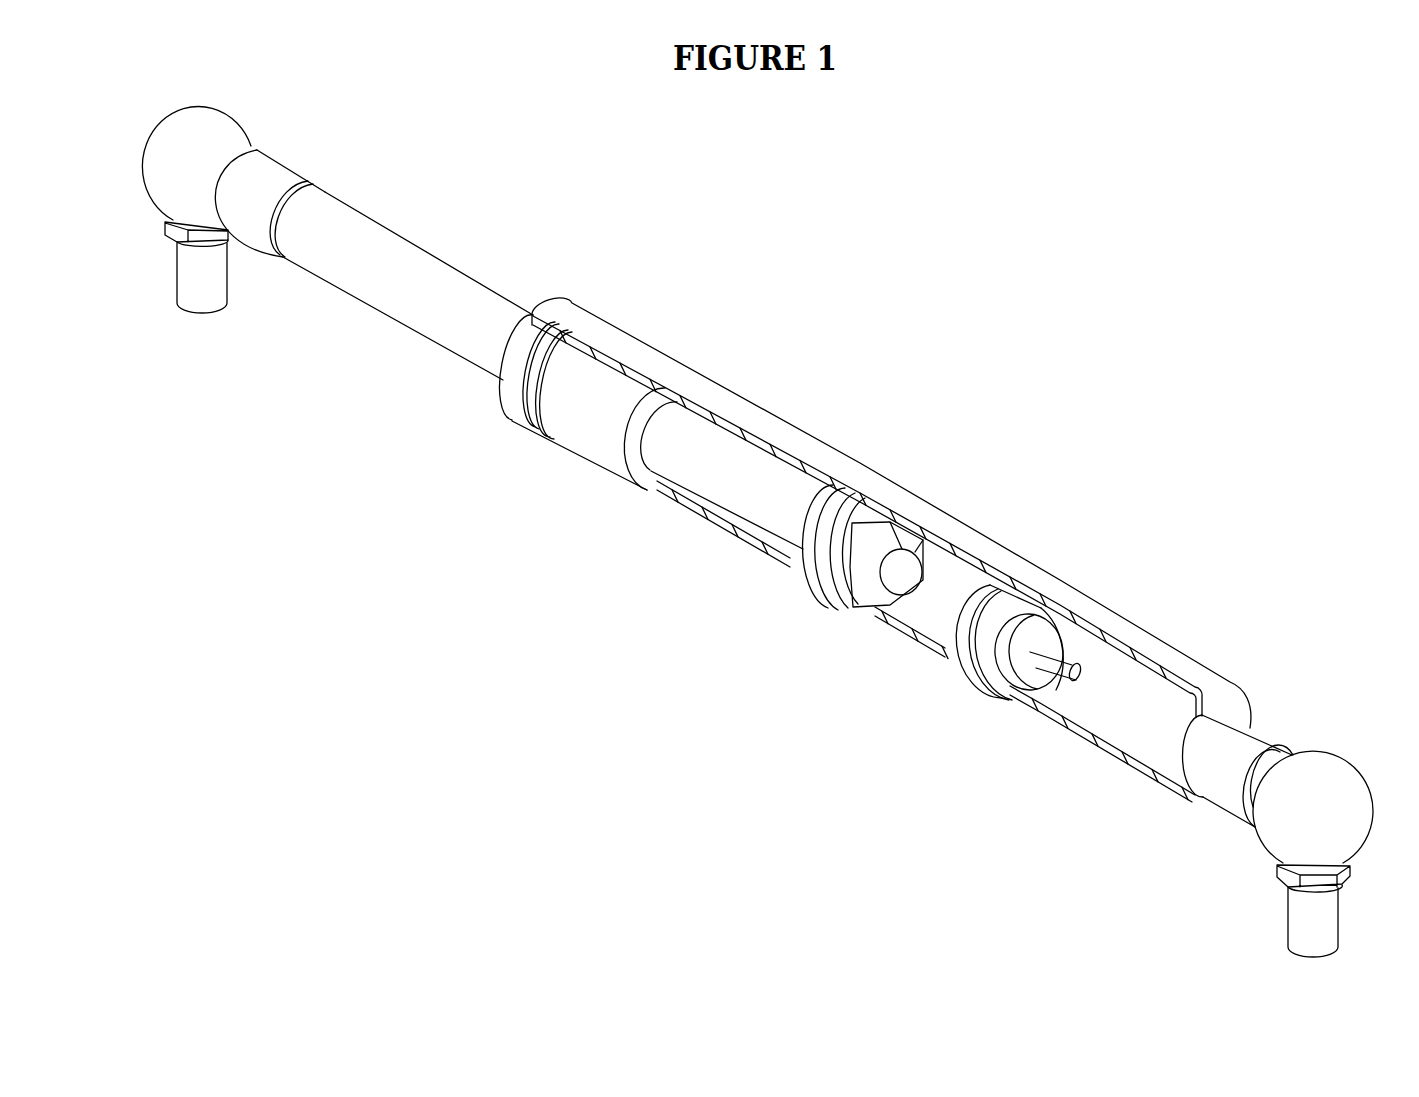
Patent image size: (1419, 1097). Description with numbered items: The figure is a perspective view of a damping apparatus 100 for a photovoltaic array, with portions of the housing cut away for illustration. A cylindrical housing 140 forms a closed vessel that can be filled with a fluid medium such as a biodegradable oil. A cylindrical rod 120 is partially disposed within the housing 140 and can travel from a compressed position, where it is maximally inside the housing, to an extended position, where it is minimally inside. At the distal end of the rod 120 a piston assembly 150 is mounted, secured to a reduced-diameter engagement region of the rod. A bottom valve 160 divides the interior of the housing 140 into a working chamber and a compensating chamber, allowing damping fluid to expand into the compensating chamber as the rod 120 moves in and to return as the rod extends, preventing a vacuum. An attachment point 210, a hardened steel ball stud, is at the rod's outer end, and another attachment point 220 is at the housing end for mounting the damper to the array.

The damping apparatus 100 is at (812, 231).
The rod 120 is at (441, 350).
The housing 140 is at (862, 448).
The piston assembly 150 is at (818, 605).
The bottom valve 160 is at (970, 690).
The attachment point 210 is at (168, 268).
The attachment point 220 is at (1284, 897).